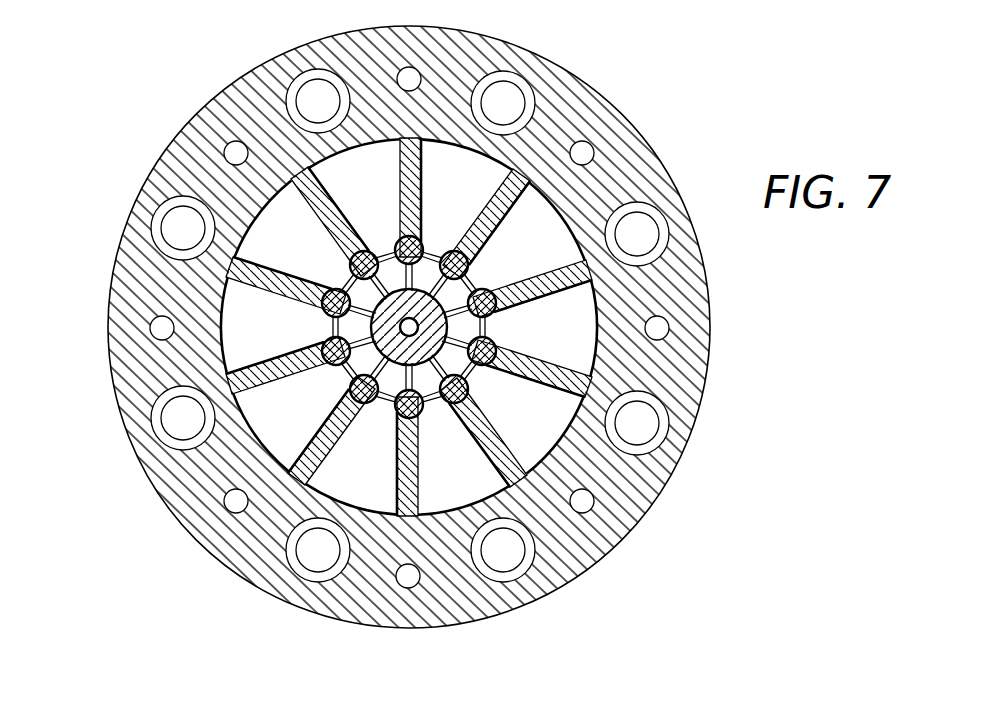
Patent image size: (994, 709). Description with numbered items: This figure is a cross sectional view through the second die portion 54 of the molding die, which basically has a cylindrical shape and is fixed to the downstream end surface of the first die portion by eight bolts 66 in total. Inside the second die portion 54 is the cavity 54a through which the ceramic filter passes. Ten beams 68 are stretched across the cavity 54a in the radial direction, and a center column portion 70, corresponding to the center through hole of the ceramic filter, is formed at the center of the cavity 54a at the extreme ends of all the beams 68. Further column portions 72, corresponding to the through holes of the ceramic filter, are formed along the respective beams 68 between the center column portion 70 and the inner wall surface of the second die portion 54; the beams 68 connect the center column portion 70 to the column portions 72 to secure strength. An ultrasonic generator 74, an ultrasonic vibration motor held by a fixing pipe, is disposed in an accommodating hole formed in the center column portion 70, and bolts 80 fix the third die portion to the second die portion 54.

The second die portion 54 is at (570, 550).
The cavity 54a is at (300, 416).
The bolts 66 is at (637, 423).
The beams 68 is at (312, 211).
The center column portion 70 is at (400, 343).
The column portions 72 is at (412, 320).
The ultrasonic generator 74 is at (412, 318).
The bolts 80 is at (407, 578).